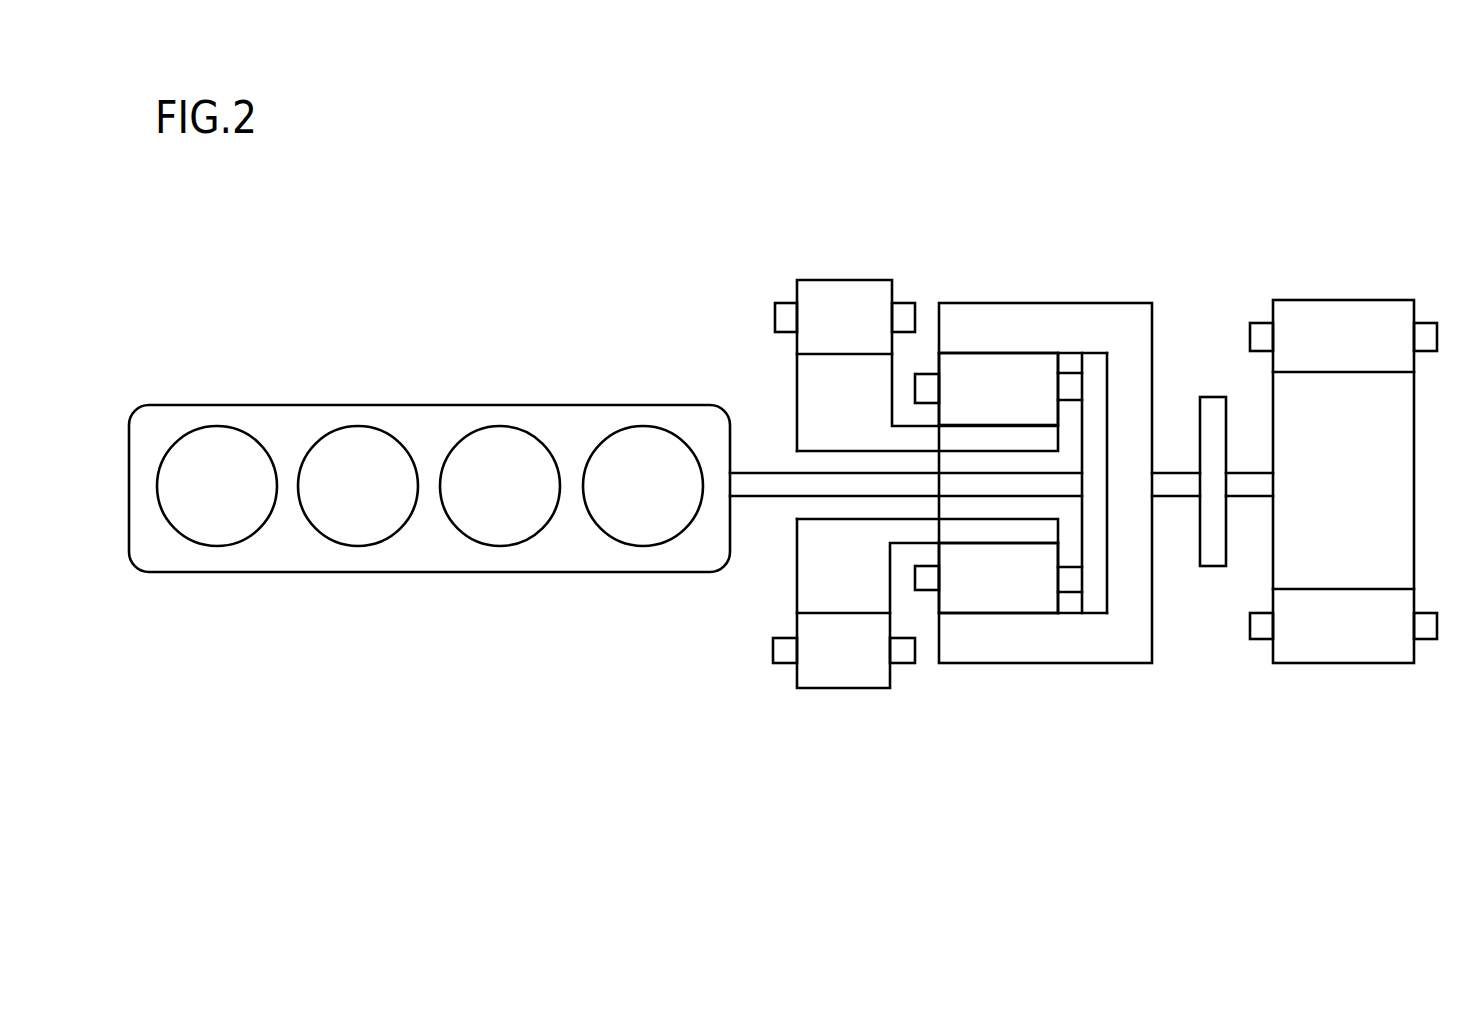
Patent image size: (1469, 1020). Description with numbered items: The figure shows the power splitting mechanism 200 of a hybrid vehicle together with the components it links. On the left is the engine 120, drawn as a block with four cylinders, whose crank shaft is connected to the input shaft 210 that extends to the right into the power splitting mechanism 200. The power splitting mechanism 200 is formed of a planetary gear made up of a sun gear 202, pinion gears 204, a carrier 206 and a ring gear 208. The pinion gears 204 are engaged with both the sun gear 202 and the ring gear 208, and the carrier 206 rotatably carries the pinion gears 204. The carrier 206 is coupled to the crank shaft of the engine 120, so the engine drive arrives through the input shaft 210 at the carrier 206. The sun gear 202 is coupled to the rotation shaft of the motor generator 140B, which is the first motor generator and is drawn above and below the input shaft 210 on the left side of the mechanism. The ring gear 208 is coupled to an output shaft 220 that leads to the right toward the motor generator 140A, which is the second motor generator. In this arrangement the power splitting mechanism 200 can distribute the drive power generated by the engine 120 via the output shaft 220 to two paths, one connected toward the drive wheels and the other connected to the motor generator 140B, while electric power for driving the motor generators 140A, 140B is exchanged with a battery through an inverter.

The engine 120 is at (430, 405).
The motor generator 140A is at (1342, 300).
The motor generator 140B is at (848, 280).
The power splitting mechanism 200 is at (1028, 477).
The sun gear 202 is at (980, 543).
The pinion gears 204 is at (1022, 613).
The carrier 206 is at (1082, 505).
The ring gear 208 is at (1105, 663).
The input shaft 210 is at (767, 498).
The output shaft 220 is at (1179, 497).